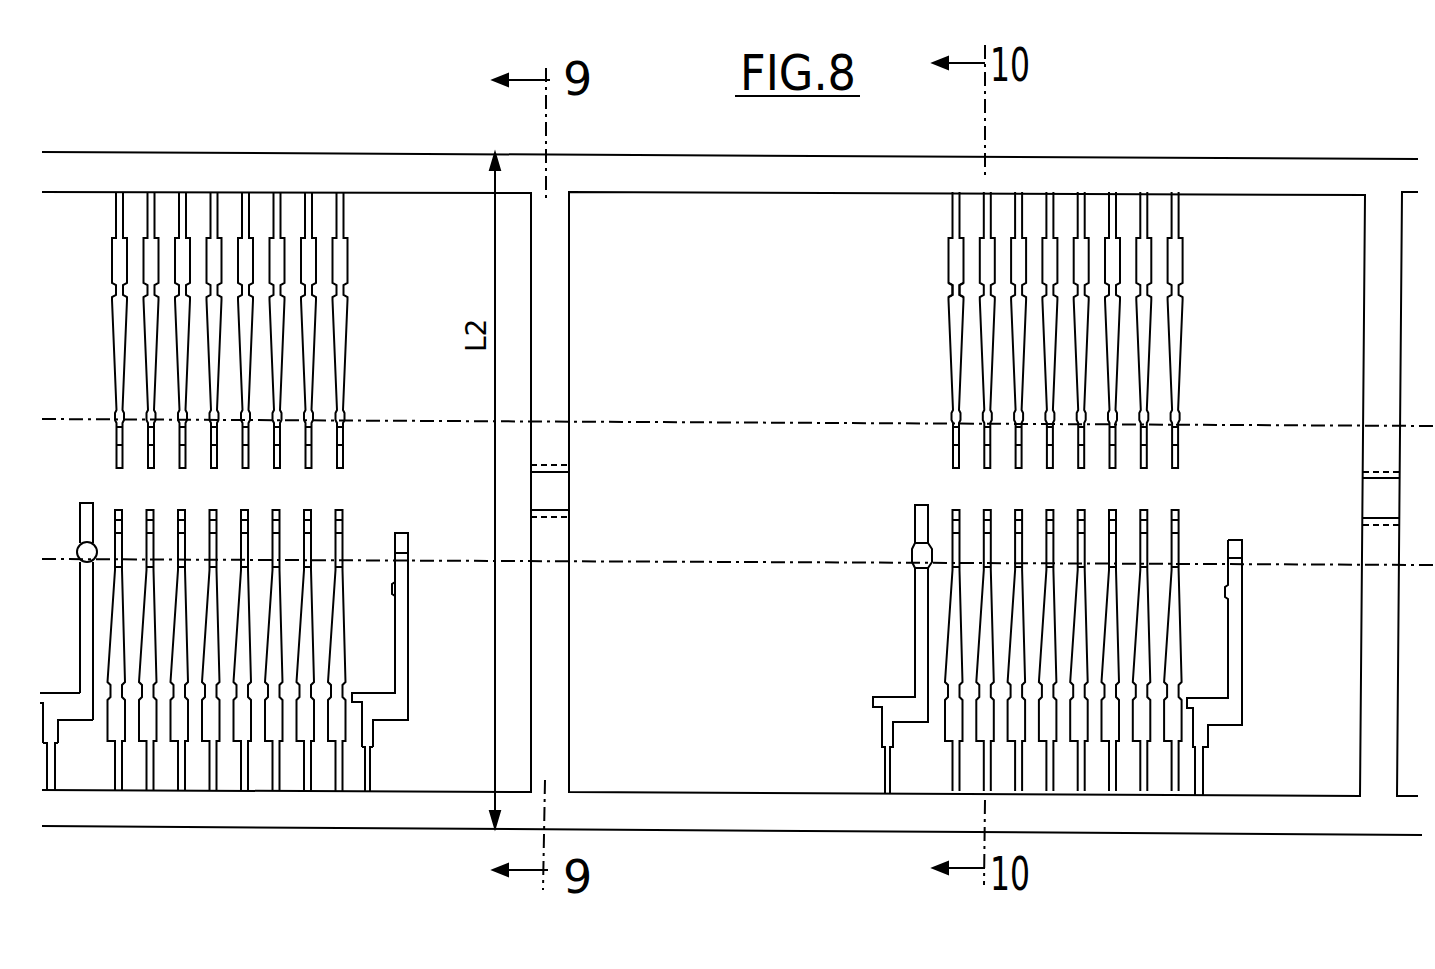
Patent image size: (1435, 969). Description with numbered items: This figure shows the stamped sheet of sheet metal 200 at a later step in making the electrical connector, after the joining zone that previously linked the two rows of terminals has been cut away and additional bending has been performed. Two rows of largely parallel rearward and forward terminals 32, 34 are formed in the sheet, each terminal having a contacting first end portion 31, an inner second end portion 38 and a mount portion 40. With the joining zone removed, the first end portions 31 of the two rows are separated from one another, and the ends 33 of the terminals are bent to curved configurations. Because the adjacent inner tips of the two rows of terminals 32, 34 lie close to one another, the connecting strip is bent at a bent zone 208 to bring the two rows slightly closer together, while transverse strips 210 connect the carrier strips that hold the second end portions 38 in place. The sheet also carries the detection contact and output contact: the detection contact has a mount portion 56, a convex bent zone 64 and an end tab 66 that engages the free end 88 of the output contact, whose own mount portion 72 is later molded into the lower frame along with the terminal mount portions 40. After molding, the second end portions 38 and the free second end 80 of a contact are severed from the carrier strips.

The sheet of sheet metal 200 is at (606, 152).
The transverse strip 210 is at (560, 318).
The bent zone 208 is at (557, 490).
The rearward terminal 32 is at (355, 432).
The contacting first end portion 31 is at (948, 362).
The forward terminal 34 is at (949, 313).
The terminal end 33 is at (948, 442).
The inner second end portion 38 is at (215, 782).
The mount portion 40 is at (337, 695).
The end tab 66 is at (79, 521).
The mount portion 56 is at (57, 703).
The bent zone 64 is at (53, 771).
The free end 88 is at (406, 545).
The mount portion 72 is at (395, 708).
The free second end 80 is at (372, 778).